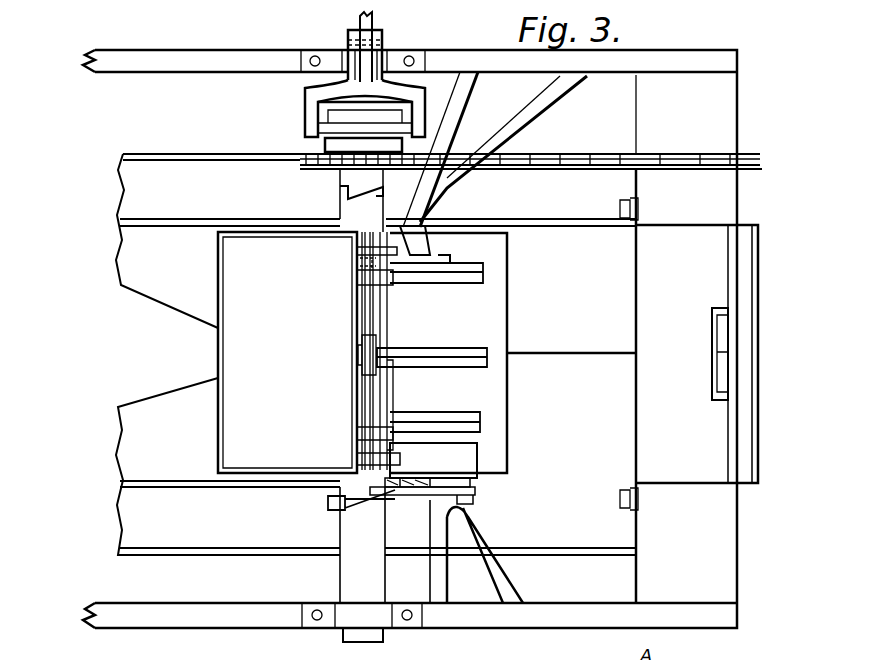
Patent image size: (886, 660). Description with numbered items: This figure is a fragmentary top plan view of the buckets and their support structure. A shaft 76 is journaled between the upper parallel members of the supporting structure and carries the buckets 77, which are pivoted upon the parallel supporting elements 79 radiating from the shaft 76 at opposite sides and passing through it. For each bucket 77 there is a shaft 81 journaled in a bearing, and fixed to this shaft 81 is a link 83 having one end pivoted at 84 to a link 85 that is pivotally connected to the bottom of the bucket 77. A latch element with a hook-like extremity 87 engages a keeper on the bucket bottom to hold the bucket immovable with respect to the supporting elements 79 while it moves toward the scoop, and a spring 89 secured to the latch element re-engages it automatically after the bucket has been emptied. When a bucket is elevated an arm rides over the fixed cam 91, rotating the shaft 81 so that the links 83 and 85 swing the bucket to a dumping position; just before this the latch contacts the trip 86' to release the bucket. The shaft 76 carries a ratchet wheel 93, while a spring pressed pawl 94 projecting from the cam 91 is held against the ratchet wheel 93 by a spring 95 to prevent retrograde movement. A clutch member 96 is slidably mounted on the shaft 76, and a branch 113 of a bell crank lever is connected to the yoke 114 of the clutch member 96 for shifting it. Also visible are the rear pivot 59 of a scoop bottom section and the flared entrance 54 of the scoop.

The branch of bell crank lever 113 is at (357, 22).
The yoke 114 is at (308, 100).
The clutch member 96 is at (345, 176).
The trip 86' is at (495, 149).
The flared opening or entrance 54 is at (182, 323).
The buckets 77 is at (508, 288).
The parallel supporting elements 79 is at (362, 278).
The hook-like extremity 87 is at (360, 259).
The spring 89 is at (432, 250).
The link 83 is at (407, 348).
The pivot 84 is at (476, 348).
The link 85 is at (468, 362).
The shaft 81 is at (389, 377).
The fixed cam 91 is at (472, 460).
The spring 95 is at (419, 482).
The spring pressed pawl 94 is at (415, 498).
The ratchet wheel 93 is at (332, 502).
The shaft 76 is at (345, 575).
The pivot 59 is at (716, 372).